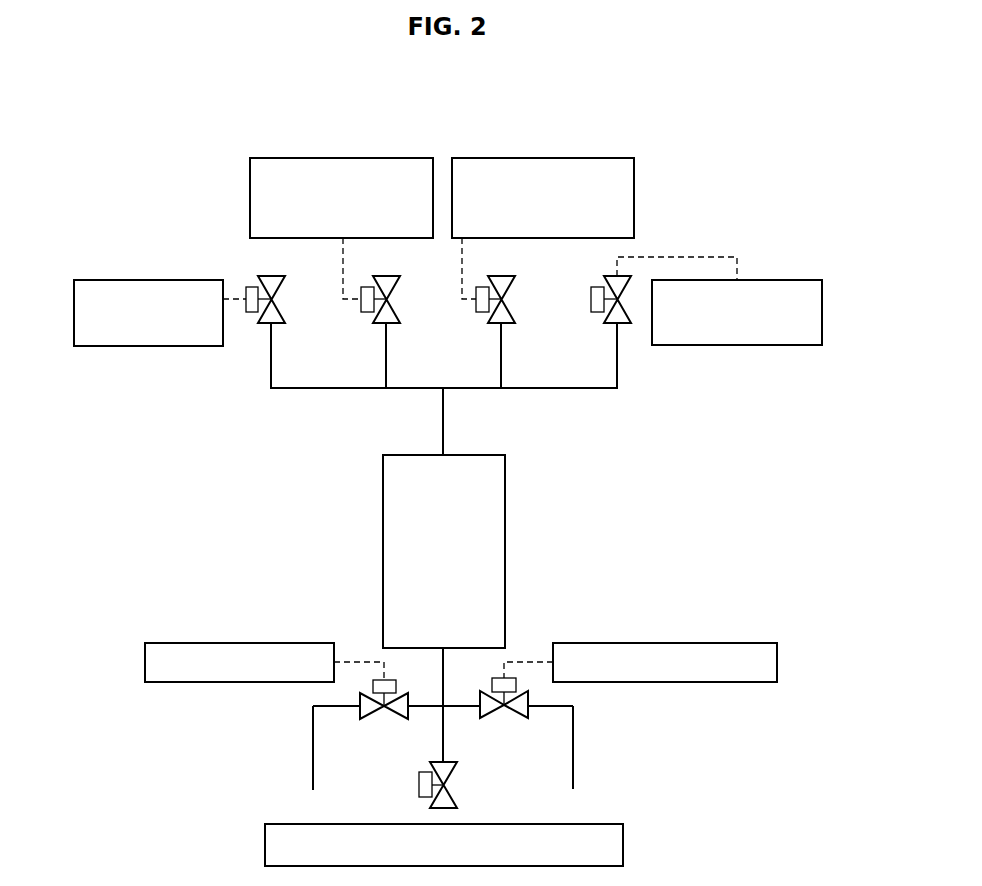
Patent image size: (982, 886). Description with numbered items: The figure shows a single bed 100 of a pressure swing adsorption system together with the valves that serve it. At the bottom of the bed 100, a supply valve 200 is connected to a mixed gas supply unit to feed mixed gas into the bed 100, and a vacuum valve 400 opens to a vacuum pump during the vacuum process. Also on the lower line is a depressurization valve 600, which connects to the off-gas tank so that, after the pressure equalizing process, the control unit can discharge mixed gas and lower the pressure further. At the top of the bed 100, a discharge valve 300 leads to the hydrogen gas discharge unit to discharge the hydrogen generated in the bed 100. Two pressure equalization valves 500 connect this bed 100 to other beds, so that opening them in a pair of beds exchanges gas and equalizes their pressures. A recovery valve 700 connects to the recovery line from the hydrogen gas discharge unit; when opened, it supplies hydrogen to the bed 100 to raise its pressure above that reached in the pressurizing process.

The bed 100 is at (505, 550).
The supply valve 200 is at (145, 662).
The discharge valve 300 is at (780, 280).
The vacuum valve 400 is at (777, 662).
The pressure equalization valves 500 is at (478, 158).
The depressurization valve 600 is at (623, 843).
The recovery valve 700 is at (150, 280).